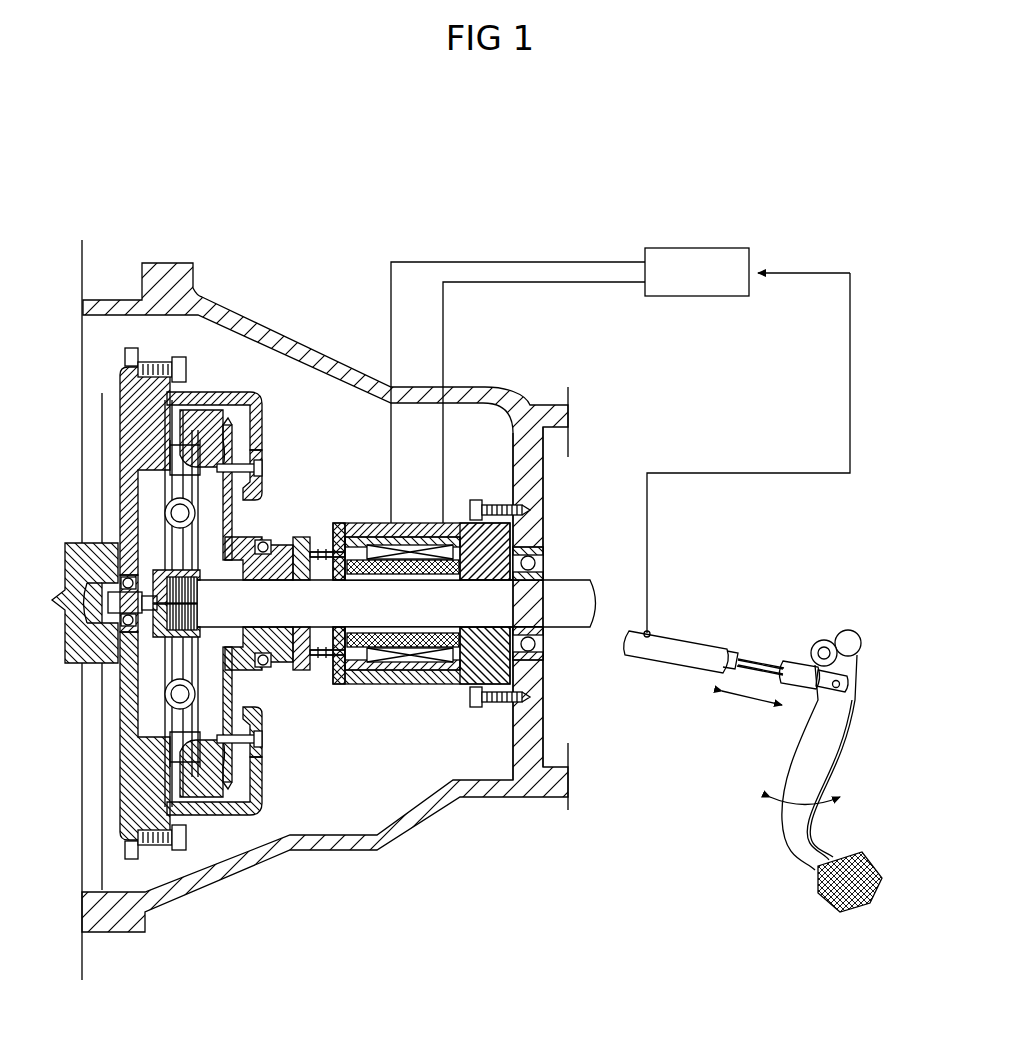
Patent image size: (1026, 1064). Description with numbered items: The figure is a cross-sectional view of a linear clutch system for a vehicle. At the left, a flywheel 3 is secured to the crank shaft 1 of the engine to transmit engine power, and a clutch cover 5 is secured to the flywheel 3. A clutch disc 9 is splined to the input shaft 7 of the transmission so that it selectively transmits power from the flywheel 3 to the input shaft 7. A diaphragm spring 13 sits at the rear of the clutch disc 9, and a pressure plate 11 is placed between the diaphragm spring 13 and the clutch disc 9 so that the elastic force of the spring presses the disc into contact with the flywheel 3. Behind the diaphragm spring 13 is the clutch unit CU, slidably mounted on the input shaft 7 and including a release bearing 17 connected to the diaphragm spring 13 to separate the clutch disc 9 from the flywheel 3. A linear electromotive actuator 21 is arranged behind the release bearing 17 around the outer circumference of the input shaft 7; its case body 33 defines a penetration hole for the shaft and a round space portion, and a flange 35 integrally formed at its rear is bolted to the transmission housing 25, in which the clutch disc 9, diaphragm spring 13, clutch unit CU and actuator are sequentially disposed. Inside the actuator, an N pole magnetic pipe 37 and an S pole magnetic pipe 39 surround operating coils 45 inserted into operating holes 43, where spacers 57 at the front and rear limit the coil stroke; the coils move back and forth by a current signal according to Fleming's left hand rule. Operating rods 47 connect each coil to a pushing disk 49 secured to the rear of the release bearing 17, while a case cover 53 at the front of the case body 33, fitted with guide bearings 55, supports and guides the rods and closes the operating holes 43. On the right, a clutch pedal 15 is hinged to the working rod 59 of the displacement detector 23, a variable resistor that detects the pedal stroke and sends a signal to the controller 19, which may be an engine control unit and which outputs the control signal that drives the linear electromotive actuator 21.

The crank shaft 1 is at (72, 578).
The flywheel 3 is at (130, 448).
The clutch cover 5 is at (257, 378).
The input shaft 7 is at (550, 585).
The clutch disc 9 is at (160, 453).
The pressure plate 11 is at (196, 400).
The diaphragm spring 13 is at (217, 692).
The clutch pedal 15 is at (842, 912).
The release bearing 17 is at (290, 836).
The controller 19 is at (697, 248).
The linear electromotive actuator 21 is at (411, 502).
The displacement detector 23 is at (677, 652).
The transmission housing 25 is at (530, 475).
The case body 33 is at (428, 683).
The flange 35 is at (497, 705).
The N pole magnetic pipe 37 is at (388, 685).
The S pole magnetic pipe 39 is at (380, 683).
The operating holes 43 is at (371, 522).
The operating coils 45 is at (410, 687).
The operating rods 47 is at (362, 682).
The pushing disk 49 is at (310, 537).
The case cover 53 is at (333, 678).
The guide bearings 55 is at (343, 522).
The spacers 57 is at (357, 522).
The working rod 59 is at (754, 668).
The clutch unit CU is at (328, 545).